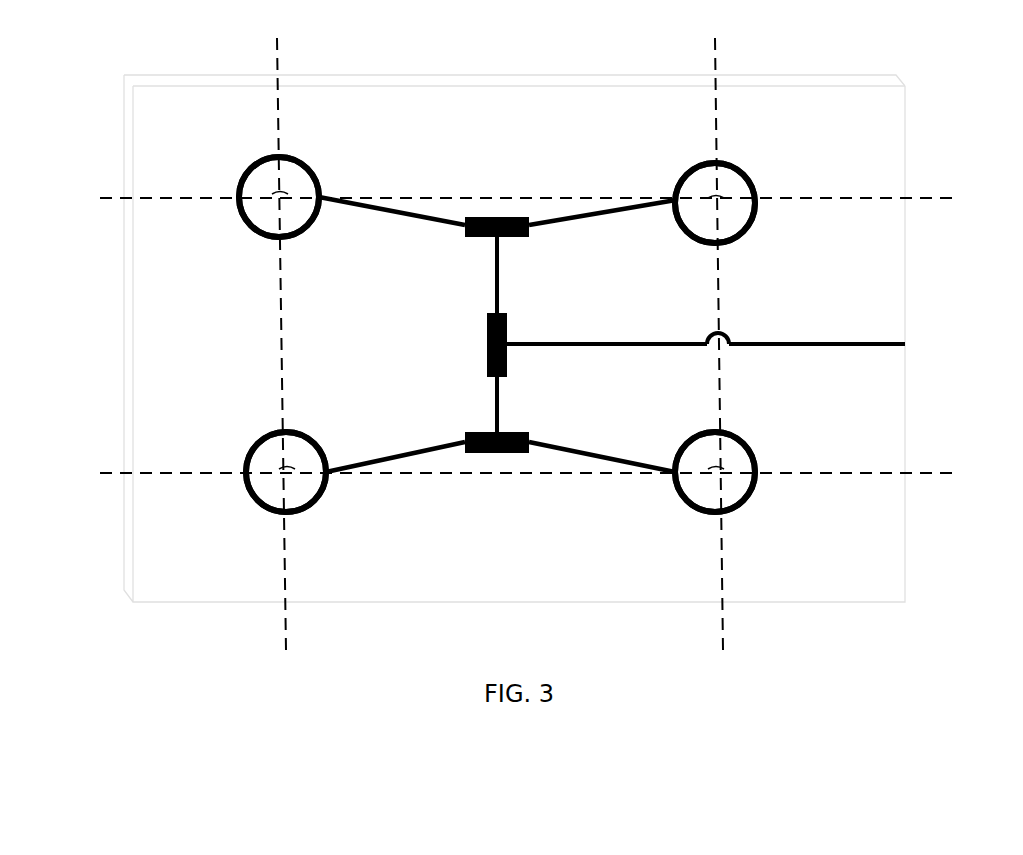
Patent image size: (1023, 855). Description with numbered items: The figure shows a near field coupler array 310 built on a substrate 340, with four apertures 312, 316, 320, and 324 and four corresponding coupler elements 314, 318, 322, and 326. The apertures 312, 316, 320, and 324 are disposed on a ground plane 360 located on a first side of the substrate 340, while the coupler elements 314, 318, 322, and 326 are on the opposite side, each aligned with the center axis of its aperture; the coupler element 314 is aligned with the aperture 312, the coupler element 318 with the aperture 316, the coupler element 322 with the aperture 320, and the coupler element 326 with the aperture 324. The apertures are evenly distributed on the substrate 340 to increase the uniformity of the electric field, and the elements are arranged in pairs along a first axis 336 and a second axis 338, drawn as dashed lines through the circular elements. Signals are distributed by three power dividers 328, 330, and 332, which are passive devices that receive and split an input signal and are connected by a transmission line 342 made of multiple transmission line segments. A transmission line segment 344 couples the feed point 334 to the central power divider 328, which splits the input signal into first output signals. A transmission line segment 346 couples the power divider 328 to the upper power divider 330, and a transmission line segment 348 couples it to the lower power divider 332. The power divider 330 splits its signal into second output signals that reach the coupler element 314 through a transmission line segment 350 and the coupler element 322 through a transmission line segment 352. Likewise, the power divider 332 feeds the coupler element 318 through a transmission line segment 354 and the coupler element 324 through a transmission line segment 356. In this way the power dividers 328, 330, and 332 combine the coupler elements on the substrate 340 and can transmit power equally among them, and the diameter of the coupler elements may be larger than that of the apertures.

The near field coupler array 310 is at (527, 65).
The aperture 312 is at (252, 227).
The coupler element 314 is at (279, 157).
The aperture 316 is at (258, 500).
The coupler element 318 is at (285, 432).
The aperture 320 is at (687, 230).
The coupler element 322 is at (714, 163).
The aperture 324 is at (687, 500).
The coupler element 326 is at (714, 432).
The power divider 328 is at (487, 343).
The power divider 330 is at (497, 217).
The power divider 332 is at (497, 454).
The feed point 334 is at (905, 344).
The first axis 336 is at (955, 198).
The second axis 338 is at (285, 625).
The substrate 340 is at (590, 86).
The transmission line 342 is at (723, 331).
The transmission line segment 344 is at (700, 348).
The transmission line segment 346 is at (497, 272).
The transmission line segment 348 is at (497, 402).
The transmission line segment 350 is at (400, 213).
The transmission line segment 352 is at (603, 213).
The transmission line segment 354 is at (393, 458).
The transmission line segment 356 is at (605, 460).
The ground plane 360 is at (161, 75).